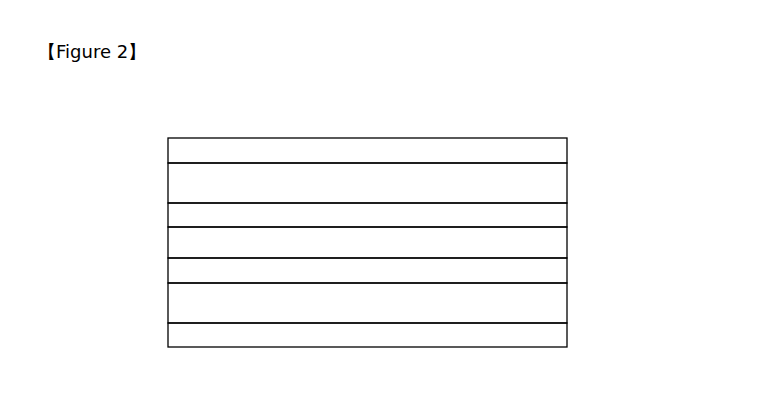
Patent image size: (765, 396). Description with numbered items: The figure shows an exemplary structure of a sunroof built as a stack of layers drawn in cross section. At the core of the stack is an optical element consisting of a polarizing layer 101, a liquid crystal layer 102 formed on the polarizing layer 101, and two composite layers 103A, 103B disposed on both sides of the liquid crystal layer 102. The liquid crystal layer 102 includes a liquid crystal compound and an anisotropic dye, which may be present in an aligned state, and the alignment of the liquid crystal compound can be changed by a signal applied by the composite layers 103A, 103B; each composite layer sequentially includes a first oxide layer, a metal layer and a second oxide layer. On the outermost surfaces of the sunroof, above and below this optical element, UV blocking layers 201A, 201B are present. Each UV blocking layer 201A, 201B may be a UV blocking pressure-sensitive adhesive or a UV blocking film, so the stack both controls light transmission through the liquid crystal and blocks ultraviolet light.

The UV blocking layer 201A is at (569, 149).
The liquid crystal layer 102 is at (168, 182).
The composite layer 103A is at (569, 215).
The composite layer 103B is at (569, 270).
The polarizing layer 101 is at (168, 307).
The UV blocking layer 201B is at (569, 333).